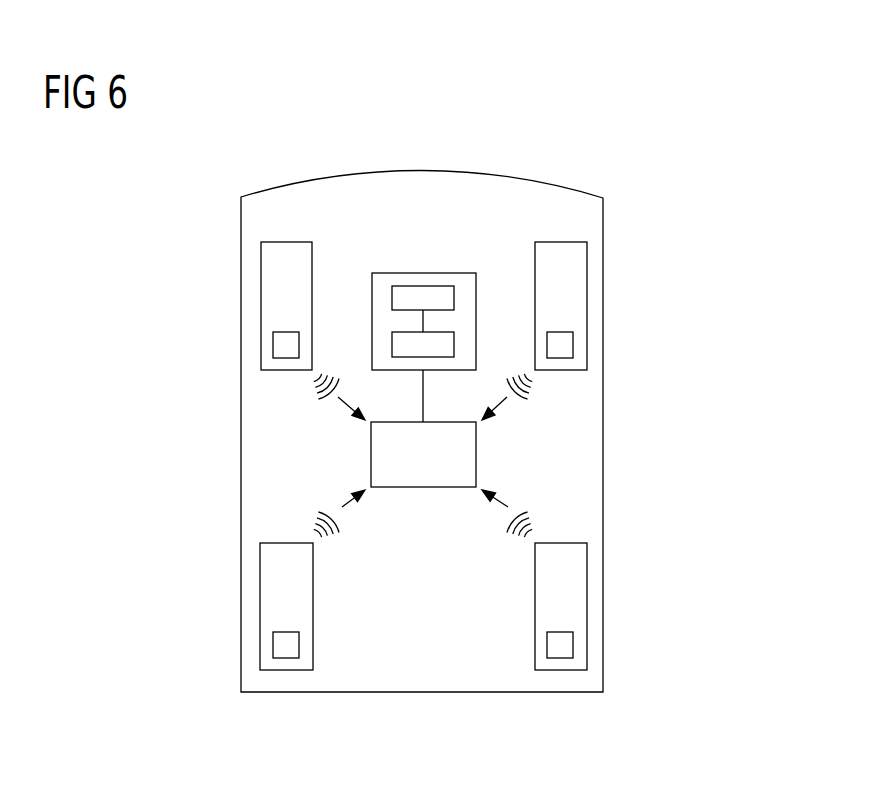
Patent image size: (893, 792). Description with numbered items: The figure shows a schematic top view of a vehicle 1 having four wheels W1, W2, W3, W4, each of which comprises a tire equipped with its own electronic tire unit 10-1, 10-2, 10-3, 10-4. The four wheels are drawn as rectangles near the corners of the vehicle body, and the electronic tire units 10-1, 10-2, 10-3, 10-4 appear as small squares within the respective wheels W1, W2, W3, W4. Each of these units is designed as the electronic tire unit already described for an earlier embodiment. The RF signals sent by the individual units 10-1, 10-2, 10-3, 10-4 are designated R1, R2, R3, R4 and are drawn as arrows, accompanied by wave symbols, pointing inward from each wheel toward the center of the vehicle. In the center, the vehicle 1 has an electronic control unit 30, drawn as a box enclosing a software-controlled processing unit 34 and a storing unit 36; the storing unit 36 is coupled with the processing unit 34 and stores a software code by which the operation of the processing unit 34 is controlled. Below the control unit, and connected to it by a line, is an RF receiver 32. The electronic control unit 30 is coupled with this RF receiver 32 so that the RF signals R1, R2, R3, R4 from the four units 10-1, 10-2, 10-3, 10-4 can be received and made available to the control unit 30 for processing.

The vehicle 1 is at (700, 147).
The wheel W1 is at (280, 272).
The wheel W2 is at (567, 270).
The wheel W3 is at (282, 570).
The wheel W4 is at (567, 570).
The electronic tire unit 10-1 is at (278, 343).
The electronic tire unit 10-2 is at (567, 345).
The electronic tire unit 10-3 is at (280, 643).
The electronic tire unit 10-4 is at (567, 645).
The electronic control unit 30 is at (369, 247).
The RF receiver 32 is at (371, 455).
The processing unit 34 is at (392, 343).
The storing unit 36 is at (392, 295).
The RF signal R1 is at (332, 404).
The RF signal R2 is at (514, 404).
The RF signal R3 is at (332, 507).
The RF signal R4 is at (514, 507).